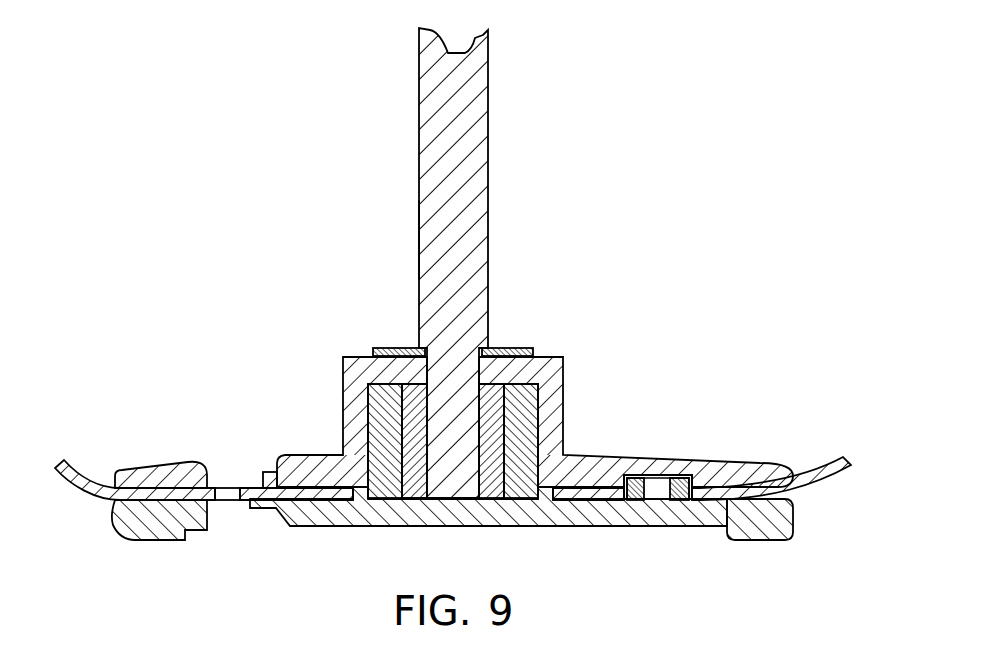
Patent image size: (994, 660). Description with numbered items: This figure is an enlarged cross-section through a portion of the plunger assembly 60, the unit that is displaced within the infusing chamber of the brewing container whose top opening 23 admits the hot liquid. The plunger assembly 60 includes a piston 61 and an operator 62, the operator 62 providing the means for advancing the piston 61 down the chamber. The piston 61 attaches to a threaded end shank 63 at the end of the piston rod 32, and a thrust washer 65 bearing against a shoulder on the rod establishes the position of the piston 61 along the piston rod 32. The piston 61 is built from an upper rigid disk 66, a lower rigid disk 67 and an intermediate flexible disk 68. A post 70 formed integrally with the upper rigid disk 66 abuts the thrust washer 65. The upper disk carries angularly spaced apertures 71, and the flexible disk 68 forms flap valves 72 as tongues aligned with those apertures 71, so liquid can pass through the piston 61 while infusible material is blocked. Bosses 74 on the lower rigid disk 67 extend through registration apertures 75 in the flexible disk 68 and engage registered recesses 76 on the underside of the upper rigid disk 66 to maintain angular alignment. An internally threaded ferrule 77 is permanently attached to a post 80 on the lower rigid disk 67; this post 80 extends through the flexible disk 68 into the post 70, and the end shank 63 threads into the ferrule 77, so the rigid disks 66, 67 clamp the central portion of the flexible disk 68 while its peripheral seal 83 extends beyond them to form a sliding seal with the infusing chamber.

The top opening 23 is at (245, 503).
The piston rod 32 is at (487, 125).
The plunger assembly 60 is at (640, 192).
The piston 61 is at (712, 369).
The operator 62 is at (400, 238).
The threaded end shank 63 is at (408, 411).
The thrust washer 65 is at (384, 348).
The upper rigid disk 66 is at (317, 455).
The lower rigid disk 67 is at (527, 527).
The intermediate flexible disk 68 is at (317, 492).
The post 70 is at (561, 357).
The apertures 71 is at (258, 480).
The flap valves 72 is at (244, 487).
The posts or bosses 74 is at (678, 500).
The registration apertures 75 is at (664, 487).
The registered recesses 76 is at (640, 472).
The internally threaded ferrule 77 is at (416, 472).
The post 80 is at (389, 440).
The peripheral sealing portion or seal 83 is at (837, 487).